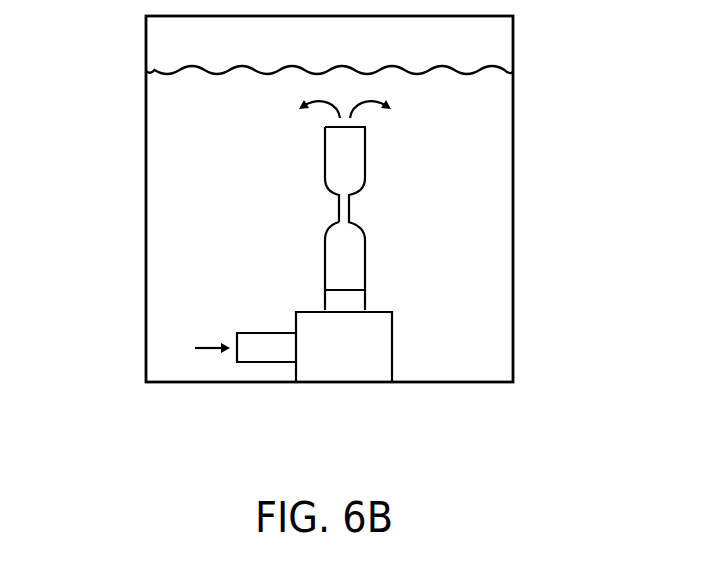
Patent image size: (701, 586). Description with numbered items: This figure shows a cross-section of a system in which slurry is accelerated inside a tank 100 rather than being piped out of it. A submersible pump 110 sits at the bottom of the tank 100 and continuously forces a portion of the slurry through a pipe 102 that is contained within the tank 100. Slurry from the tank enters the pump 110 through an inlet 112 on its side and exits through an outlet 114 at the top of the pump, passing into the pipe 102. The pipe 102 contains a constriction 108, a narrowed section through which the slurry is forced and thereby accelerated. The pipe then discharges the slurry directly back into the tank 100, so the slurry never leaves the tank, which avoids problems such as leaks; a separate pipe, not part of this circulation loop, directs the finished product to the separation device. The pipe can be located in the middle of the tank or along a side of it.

The tank 100 is at (146, 266).
The pipe 102 is at (366, 260).
The constriction 108 is at (352, 208).
The submersible pump 110 is at (383, 357).
The inlet 112 is at (268, 362).
The outlet 114 is at (366, 306).